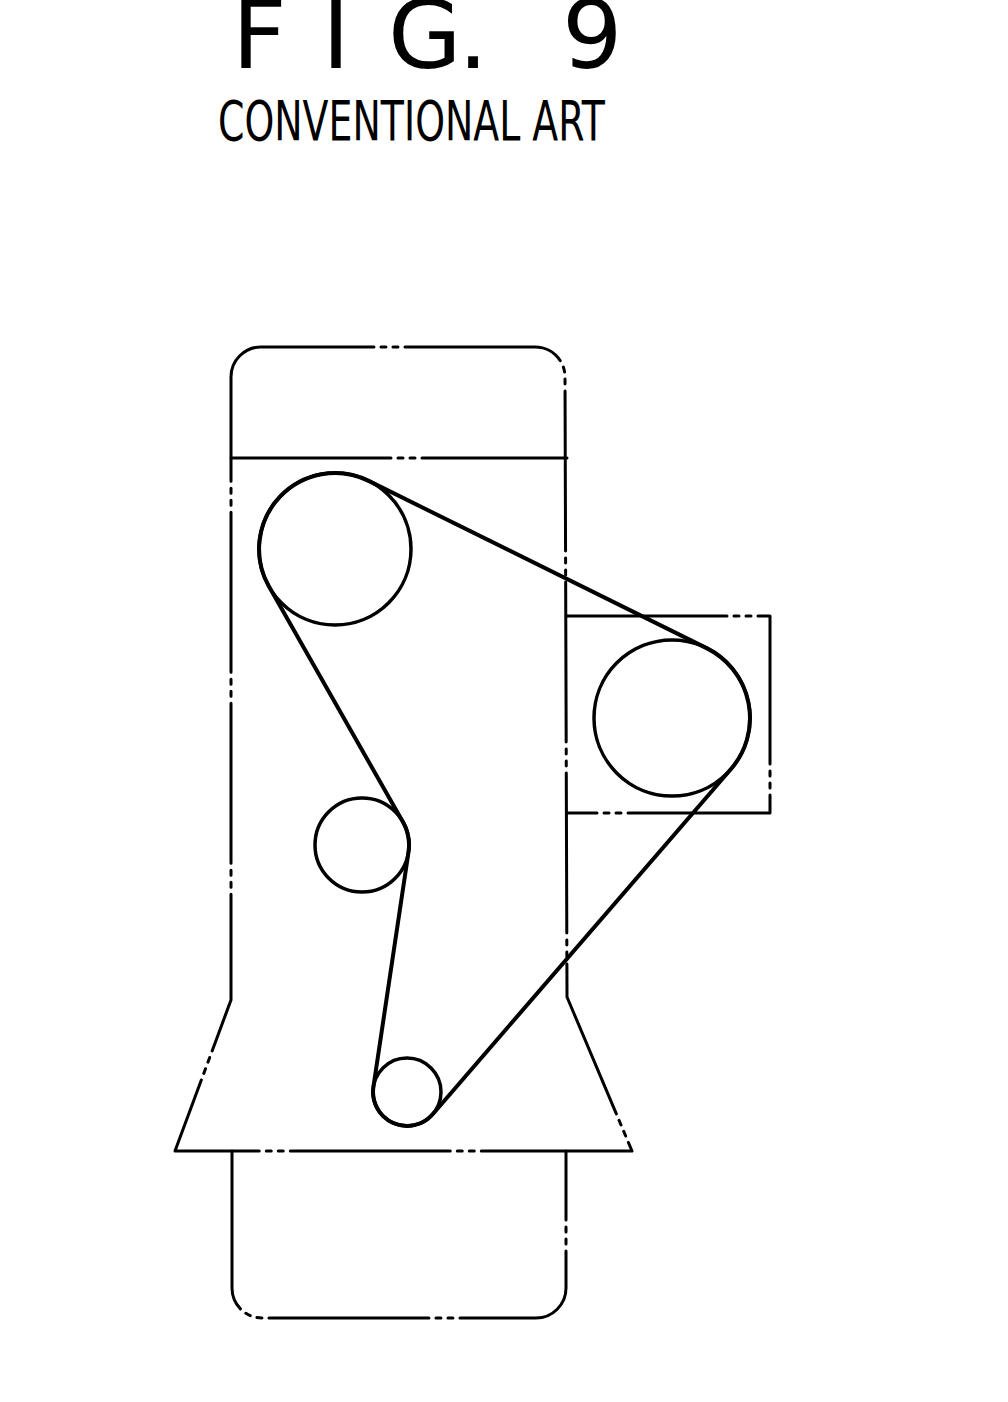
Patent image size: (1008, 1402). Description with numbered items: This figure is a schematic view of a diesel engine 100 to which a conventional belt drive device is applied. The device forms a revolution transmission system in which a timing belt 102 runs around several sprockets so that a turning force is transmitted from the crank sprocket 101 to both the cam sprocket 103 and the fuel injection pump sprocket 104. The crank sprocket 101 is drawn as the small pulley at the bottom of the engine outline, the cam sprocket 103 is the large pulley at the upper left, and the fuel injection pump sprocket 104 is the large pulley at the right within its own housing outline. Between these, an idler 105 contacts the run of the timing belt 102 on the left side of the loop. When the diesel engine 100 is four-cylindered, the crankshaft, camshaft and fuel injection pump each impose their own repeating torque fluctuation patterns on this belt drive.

The diesel engine 100 is at (227, 622).
The crank sprocket 101 is at (413, 1093).
The timing belt 102 is at (592, 588).
The cam sprocket 103 is at (340, 542).
The fuel injection pump sprocket 104 is at (703, 718).
The idler 105 is at (348, 852).